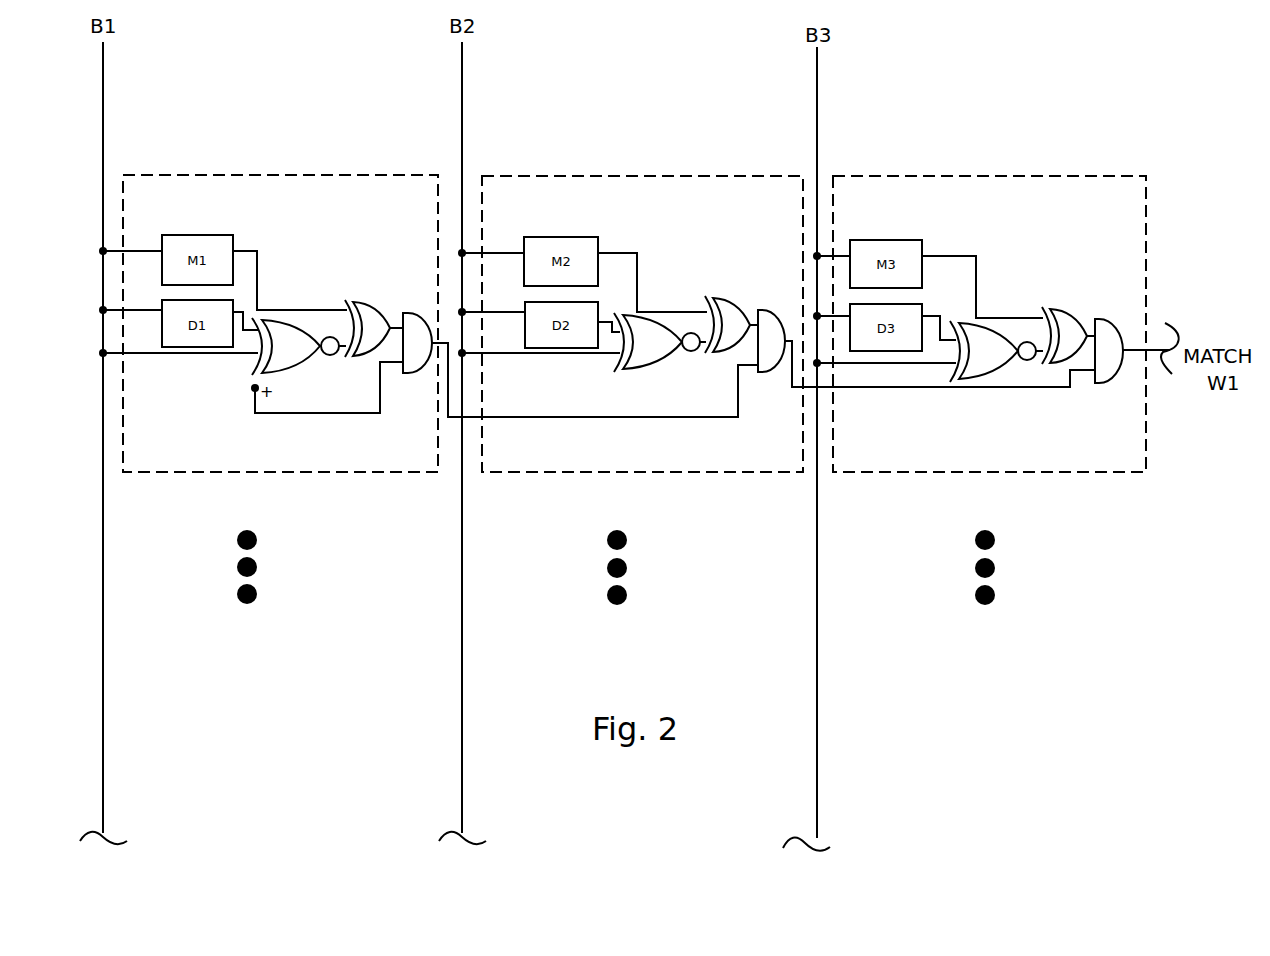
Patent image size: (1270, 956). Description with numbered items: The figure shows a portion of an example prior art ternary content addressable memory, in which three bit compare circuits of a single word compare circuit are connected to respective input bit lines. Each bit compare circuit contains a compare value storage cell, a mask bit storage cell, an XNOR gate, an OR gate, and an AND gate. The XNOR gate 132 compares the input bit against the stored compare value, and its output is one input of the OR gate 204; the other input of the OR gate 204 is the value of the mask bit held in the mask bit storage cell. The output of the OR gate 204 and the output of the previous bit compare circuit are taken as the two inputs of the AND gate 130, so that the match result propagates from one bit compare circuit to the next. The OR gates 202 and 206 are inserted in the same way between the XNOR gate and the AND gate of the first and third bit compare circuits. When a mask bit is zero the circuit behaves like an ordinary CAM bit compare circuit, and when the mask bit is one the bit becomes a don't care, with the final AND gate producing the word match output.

The OR gate 202 is at (364, 300).
The XNOR gate 132 is at (659, 320).
The OR gate 204 is at (722, 297).
The AND gate 130 is at (764, 310).
The OR gate 206 is at (1053, 307).